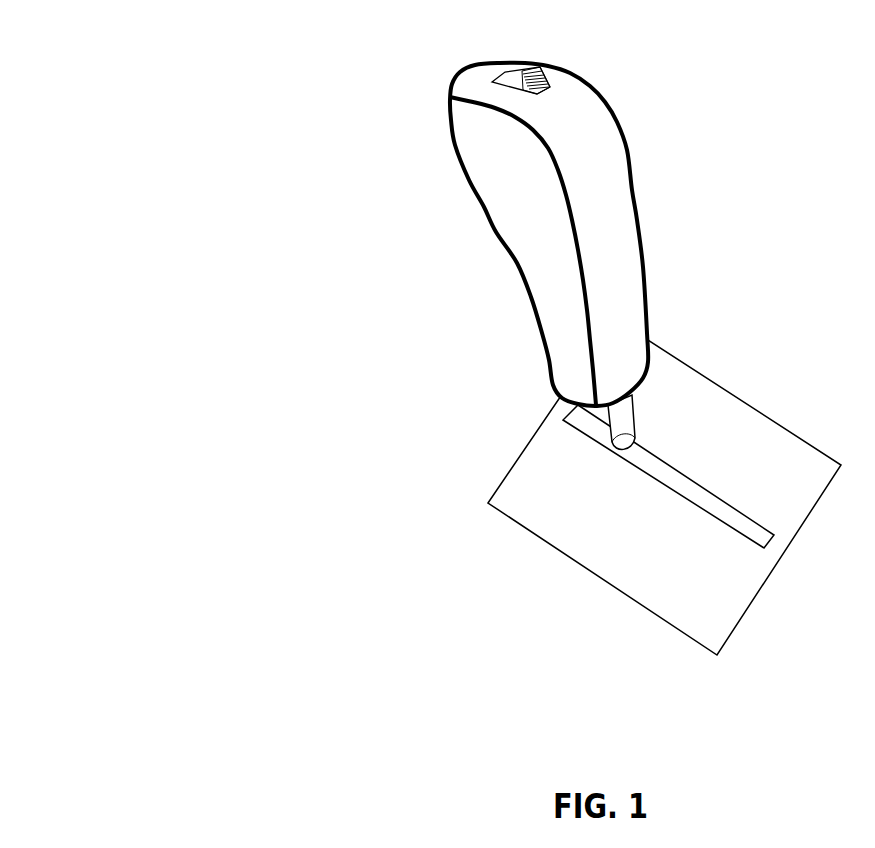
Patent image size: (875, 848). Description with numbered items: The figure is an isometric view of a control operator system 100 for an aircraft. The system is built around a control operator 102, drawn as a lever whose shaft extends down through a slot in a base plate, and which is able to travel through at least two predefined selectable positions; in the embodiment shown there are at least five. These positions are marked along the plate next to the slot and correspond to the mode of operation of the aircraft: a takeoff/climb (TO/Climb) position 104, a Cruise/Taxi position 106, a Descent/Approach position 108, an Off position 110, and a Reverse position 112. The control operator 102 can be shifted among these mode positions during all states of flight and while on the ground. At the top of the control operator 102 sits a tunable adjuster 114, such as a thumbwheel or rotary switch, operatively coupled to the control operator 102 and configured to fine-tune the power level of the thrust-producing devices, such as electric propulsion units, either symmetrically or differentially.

The control operator system 100 is at (173, 91).
The control operator 102 is at (645, 278).
The takeoff/climb (TO/Climb) position 104 is at (520, 495).
The Cruise/Taxi position 106 is at (567, 527).
The Descent/Approach position 108 is at (617, 592).
The Off position 110 is at (682, 573).
The Reverse position 112 is at (738, 582).
The tunable adjuster 114 is at (533, 63).